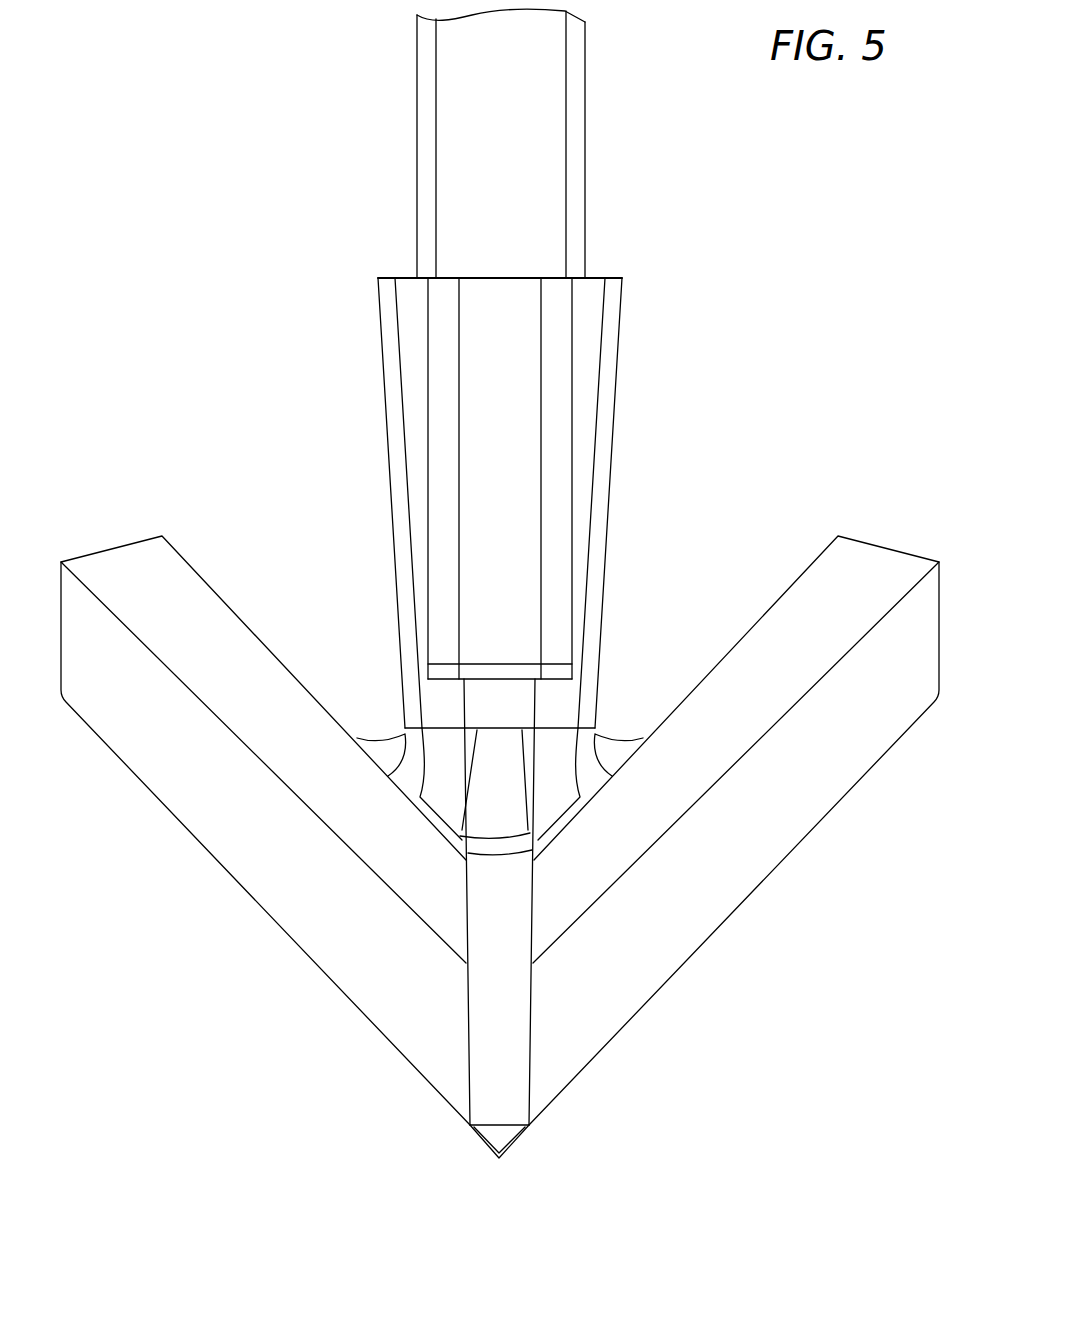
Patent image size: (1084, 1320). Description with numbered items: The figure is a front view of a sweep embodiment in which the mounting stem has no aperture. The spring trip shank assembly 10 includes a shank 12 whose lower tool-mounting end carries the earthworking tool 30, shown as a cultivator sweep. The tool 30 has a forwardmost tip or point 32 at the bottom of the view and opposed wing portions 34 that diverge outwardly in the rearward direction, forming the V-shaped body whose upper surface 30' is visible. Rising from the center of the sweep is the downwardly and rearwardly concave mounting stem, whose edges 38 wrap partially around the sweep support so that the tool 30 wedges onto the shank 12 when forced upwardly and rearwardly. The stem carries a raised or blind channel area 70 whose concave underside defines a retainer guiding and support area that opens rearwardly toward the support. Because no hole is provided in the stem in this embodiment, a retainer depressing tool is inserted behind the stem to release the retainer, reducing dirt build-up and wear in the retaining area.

The spring trip shank assembly 10 is at (220, 155).
The shank 12 is at (463, 105).
The edges 38 is at (502, 303).
The raised or blind channel area 70 is at (523, 517).
The earthworking tool 30 is at (499, 802).
The top surface of blade body 30' is at (500, 721).
The wing portions 34 is at (115, 738).
The tip or point 32 is at (499, 1160).